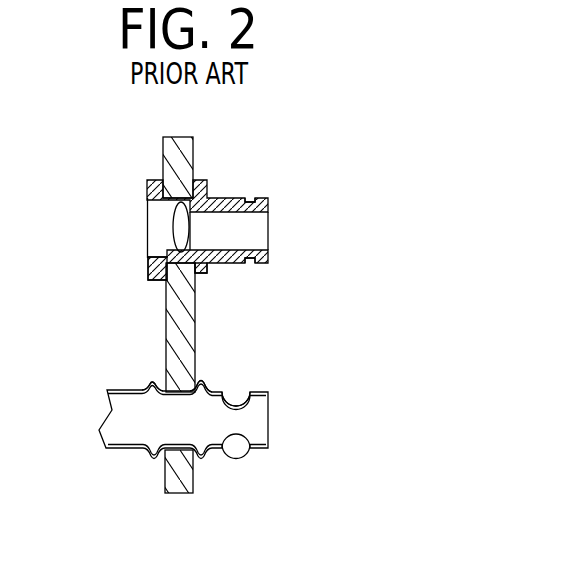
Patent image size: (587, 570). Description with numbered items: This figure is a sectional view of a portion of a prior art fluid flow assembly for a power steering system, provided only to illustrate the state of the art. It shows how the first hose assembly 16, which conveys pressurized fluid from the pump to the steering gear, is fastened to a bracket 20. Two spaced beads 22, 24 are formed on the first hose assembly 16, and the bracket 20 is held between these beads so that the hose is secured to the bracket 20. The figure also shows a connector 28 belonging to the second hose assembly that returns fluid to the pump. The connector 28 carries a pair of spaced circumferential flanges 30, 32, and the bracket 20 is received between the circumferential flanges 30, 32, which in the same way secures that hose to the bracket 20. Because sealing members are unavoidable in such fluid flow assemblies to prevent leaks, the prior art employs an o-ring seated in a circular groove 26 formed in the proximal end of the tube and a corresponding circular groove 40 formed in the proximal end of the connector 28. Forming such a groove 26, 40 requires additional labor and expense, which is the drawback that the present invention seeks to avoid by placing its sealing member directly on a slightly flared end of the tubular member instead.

The first hose assembly 16 is at (107, 408).
The bracket 20 is at (195, 477).
The bead 22 is at (152, 386).
The bead 24 is at (212, 392).
The circular groove 26 is at (243, 394).
The connector 28 is at (213, 191).
The circumferential flange 30 is at (146, 267).
The circumferential flange 32 is at (208, 272).
The circular groove 40 is at (251, 199).